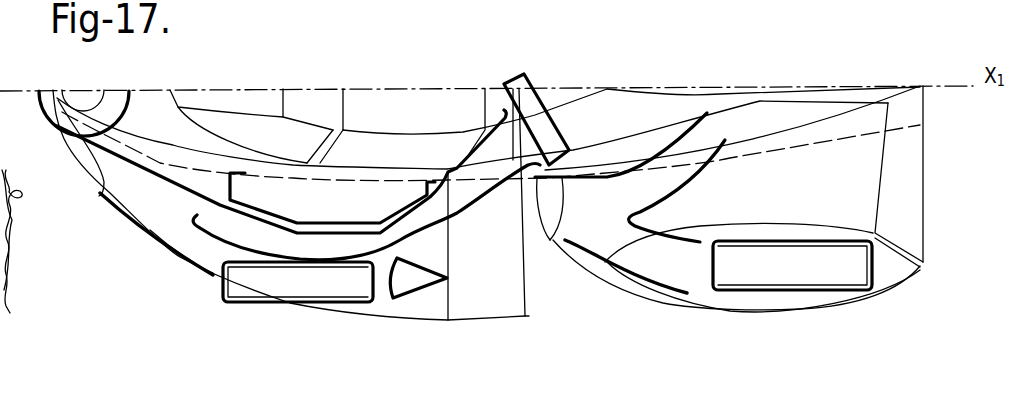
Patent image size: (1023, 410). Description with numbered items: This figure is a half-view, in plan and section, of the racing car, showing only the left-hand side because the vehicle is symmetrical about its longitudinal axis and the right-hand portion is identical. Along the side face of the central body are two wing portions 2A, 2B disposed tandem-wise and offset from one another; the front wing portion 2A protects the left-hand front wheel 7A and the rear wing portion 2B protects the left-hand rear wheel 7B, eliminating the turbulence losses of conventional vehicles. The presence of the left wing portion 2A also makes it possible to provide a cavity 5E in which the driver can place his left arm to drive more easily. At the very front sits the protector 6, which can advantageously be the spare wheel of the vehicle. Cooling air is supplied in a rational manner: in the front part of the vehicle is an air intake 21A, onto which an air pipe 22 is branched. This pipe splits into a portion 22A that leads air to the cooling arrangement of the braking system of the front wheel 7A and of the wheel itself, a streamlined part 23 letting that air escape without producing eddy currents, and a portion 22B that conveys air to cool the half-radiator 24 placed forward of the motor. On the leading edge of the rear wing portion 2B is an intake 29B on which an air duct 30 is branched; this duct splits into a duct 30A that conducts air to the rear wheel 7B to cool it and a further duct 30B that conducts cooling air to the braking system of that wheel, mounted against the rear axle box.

The left front wing portion 2A is at (420, 305).
The left rear wing portion 2B is at (753, 300).
The cavity 5E is at (368, 193).
The protector 6 is at (43, 108).
The left-hand front wheel 7A is at (293, 275).
The left-hand rear wheel 7B is at (773, 260).
The air intake 21A is at (93, 165).
The air pipe 22 is at (143, 203).
The air pipe portion 22A is at (207, 260).
The air pipe portion 22B is at (213, 215).
The streamlined part 23 is at (425, 262).
The half-radiator 24 is at (535, 110).
The air intake 29B is at (555, 213).
The air duct 30 is at (595, 228).
The air duct 30A is at (665, 270).
The air duct 30B is at (677, 176).